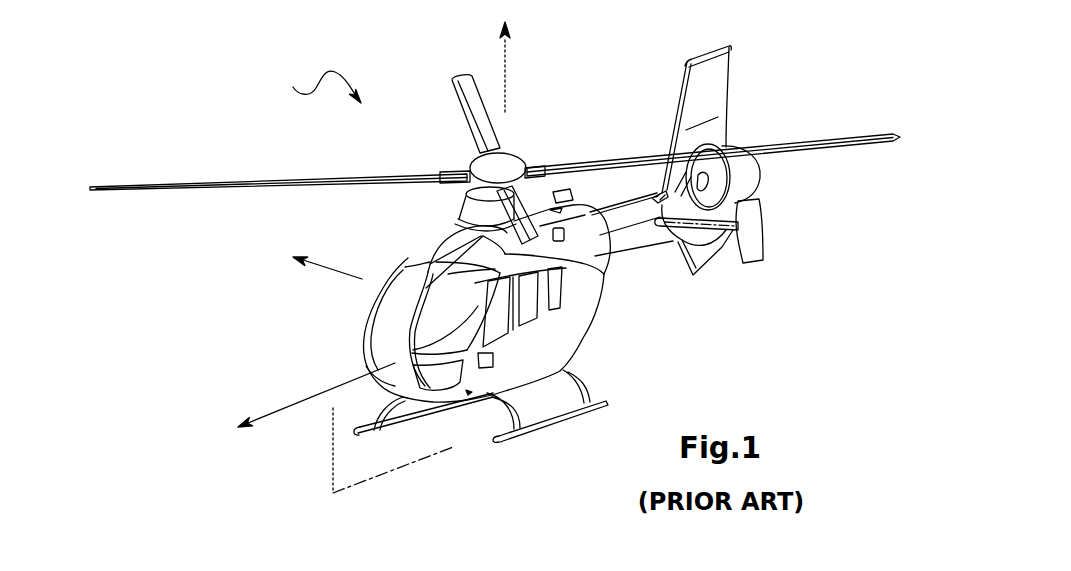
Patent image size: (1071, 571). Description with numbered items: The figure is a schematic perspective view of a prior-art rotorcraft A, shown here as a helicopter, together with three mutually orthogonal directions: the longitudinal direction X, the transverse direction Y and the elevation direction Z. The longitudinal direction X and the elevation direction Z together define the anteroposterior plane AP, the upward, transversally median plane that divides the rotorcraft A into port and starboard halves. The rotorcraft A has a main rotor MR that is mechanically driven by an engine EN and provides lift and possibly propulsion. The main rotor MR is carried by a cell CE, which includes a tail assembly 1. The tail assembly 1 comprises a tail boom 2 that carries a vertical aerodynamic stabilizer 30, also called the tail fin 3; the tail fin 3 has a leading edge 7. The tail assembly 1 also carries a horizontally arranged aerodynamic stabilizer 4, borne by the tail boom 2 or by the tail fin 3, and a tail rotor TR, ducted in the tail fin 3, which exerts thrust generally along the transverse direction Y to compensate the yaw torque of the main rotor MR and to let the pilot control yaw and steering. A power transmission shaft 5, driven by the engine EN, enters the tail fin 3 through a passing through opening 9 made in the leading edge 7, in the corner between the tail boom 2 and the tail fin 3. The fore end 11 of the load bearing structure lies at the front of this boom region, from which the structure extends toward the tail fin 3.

The tail assembly 1 is at (495, 287).
The tail boom 2 is at (631, 211).
The tail fin 3 is at (729, 112).
The aerodynamic stabilizer 4 is at (729, 253).
The power transmission shaft 5 is at (618, 203).
The leading edge 7 is at (668, 96).
The passing through opening 9 is at (661, 201).
The fore end 11 is at (602, 273).
The vertical aerodynamic stabilizer 30 is at (713, 90).
The main rotor MR is at (182, 190).
The tail rotor TR is at (758, 156).
The engine EN is at (490, 208).
The cell CE is at (512, 330).
The anteroposterior plane AP is at (348, 472).
The rotorcraft A is at (315, 87).
The longitudinal direction X is at (306, 402).
The transverse direction Y is at (318, 261).
The elevation direction Z is at (504, 56).